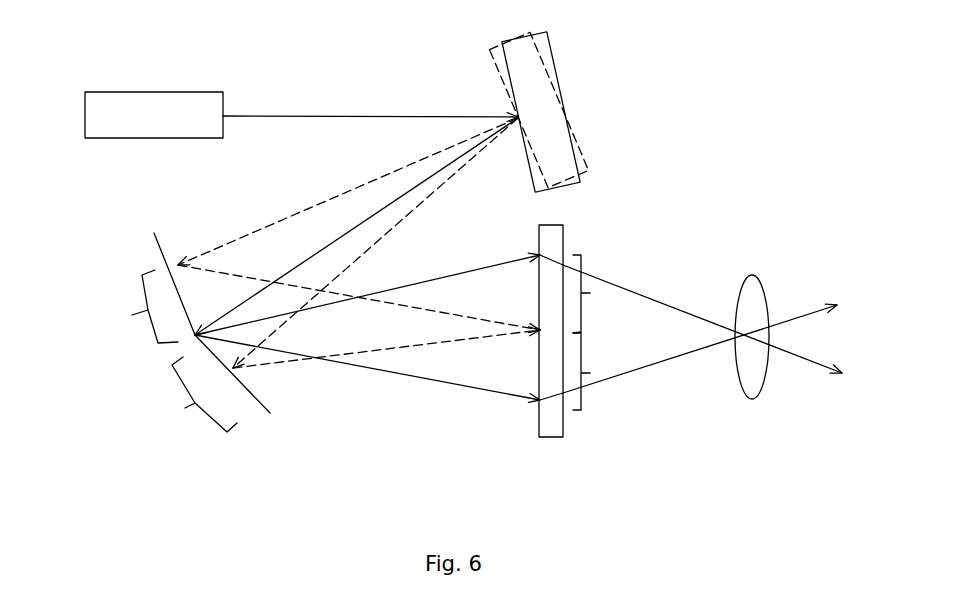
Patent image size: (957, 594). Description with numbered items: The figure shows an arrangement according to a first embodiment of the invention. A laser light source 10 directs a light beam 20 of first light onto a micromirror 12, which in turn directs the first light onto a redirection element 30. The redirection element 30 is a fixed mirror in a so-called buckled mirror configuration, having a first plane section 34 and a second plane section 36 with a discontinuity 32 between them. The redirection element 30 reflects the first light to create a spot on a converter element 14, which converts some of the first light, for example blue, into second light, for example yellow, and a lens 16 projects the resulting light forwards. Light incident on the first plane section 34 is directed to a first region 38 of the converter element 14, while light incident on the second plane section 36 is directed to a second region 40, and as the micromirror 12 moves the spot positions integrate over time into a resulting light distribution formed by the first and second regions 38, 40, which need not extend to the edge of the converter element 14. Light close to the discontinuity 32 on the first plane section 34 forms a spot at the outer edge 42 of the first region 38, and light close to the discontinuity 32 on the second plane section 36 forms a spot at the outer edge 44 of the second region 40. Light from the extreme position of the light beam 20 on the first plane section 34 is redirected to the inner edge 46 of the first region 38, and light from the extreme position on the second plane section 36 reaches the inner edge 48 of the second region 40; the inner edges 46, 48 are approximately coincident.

The laser light source 10 is at (178, 115).
The light beam 20 is at (357, 117).
The micromirror 12 is at (533, 115).
The discontinuity 32 is at (195, 338).
The first plane section 34 is at (139, 306).
The second plane section 36 is at (196, 396).
The redirection element 30 is at (125, 437).
The outer edge of the second region 44 is at (538, 253).
The outer edge of the first region 42 is at (538, 400).
The inner edge of the second region 48 is at (538, 327).
The inner edge of the first region 46 is at (538, 333).
The converter element 14 is at (548, 418).
The second region 40 is at (598, 294).
The first region 38 is at (598, 371).
The lens 16 is at (757, 372).